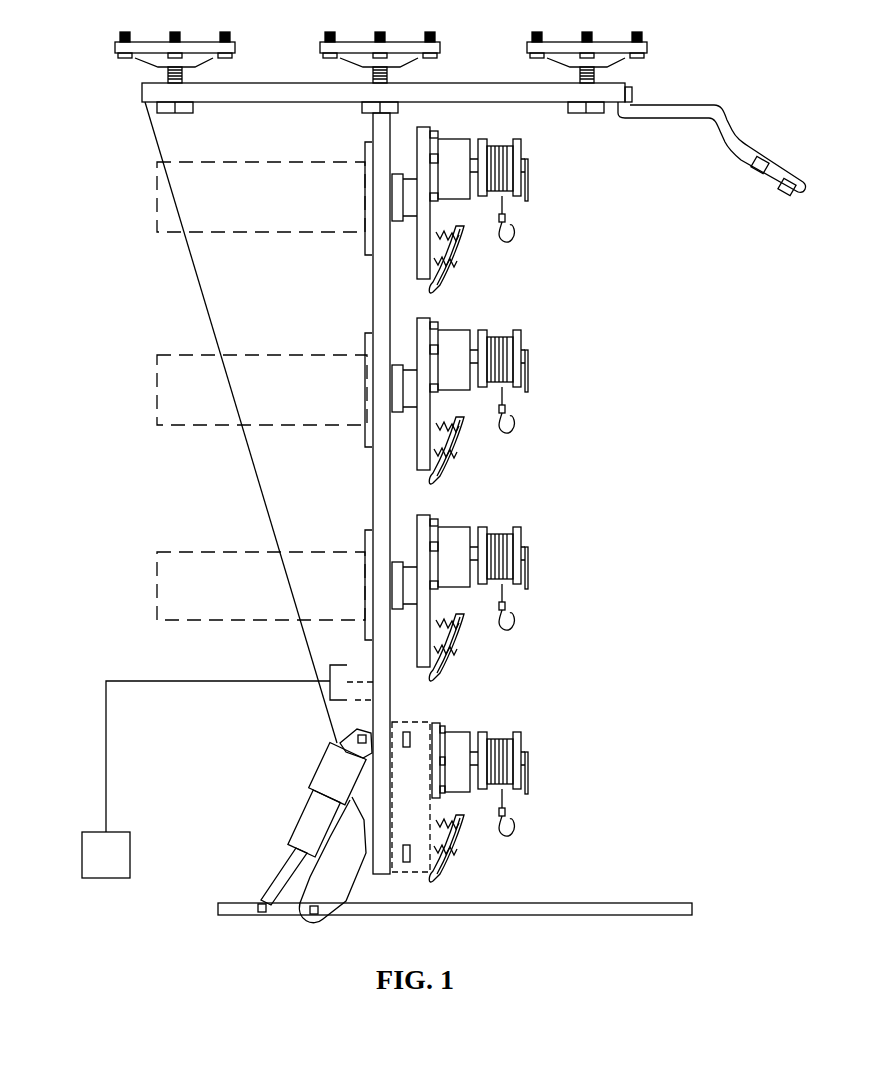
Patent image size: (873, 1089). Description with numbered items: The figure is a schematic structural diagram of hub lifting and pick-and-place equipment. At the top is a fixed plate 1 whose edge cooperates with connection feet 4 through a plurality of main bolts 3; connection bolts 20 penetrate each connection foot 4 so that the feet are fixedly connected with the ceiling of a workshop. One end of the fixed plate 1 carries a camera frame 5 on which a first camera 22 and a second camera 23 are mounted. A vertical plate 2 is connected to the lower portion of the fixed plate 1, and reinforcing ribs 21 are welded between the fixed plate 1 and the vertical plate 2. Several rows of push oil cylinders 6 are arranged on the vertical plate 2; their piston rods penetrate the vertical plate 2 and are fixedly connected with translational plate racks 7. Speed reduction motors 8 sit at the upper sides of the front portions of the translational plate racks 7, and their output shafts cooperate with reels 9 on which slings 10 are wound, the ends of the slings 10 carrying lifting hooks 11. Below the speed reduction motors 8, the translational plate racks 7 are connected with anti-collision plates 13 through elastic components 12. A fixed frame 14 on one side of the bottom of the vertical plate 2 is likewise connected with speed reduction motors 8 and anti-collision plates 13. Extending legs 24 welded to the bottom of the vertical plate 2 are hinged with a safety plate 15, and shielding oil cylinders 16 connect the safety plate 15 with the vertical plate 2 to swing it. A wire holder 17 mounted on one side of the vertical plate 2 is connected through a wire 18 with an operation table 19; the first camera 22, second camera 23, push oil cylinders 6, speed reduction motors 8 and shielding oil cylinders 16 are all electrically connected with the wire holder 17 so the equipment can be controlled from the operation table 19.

The fixed plate 1 is at (243, 92).
The vertical plate 2 is at (388, 278).
The main bolts 3 is at (158, 105).
The connection feet 4 is at (162, 60).
The camera frame 5 is at (650, 113).
The push oil cylinders 6 is at (162, 207).
The translational plate racks 7 is at (427, 327).
The speed reduction motors 8 is at (448, 345).
The reels 9 is at (478, 343).
The slings 10 is at (500, 400).
The lifting hooks 11 is at (462, 432).
The elastic components 12 is at (450, 665).
The anti-collision plates 13 is at (467, 622).
The fixed frame 14 is at (417, 810).
The safety plate 15 is at (498, 908).
The shielding oil cylinders 16 is at (313, 820).
The wire holder 17 is at (330, 672).
The wire 18 is at (105, 755).
The operation table 19 is at (110, 860).
The connection bolts 20 is at (120, 40).
The reinforcing ribs 21 is at (213, 255).
The first camera 22 is at (757, 165).
The second camera 23 is at (780, 190).
The extending legs 24 is at (347, 880).